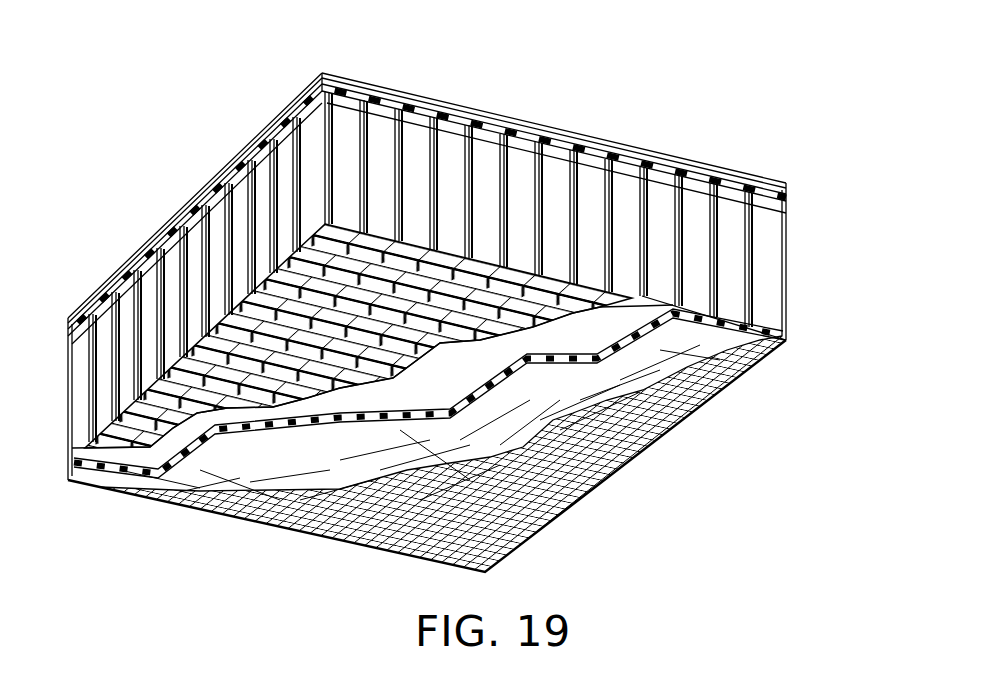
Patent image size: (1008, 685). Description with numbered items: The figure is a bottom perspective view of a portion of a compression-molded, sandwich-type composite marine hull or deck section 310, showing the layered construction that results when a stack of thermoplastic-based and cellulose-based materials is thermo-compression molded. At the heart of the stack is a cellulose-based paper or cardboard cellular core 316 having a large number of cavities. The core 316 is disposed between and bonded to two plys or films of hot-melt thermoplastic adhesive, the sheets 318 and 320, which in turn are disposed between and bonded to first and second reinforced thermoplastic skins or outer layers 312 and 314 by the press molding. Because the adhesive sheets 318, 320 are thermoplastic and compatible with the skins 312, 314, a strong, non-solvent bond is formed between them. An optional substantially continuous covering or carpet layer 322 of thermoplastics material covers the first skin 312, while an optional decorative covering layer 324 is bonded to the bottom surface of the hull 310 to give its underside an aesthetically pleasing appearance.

The composite marine hull or deck section 310 is at (608, 80).
The first reinforced thermoplastic skin 312 is at (750, 210).
The second reinforced thermoplastic skin 314 is at (785, 340).
The cellular core 316 is at (787, 267).
The hot-melt adhesive sheet 318 is at (762, 203).
The hot-melt adhesive sheet 320 is at (767, 322).
The carpet layer 322 is at (790, 185).
The decorative covering layer 324 is at (753, 370).